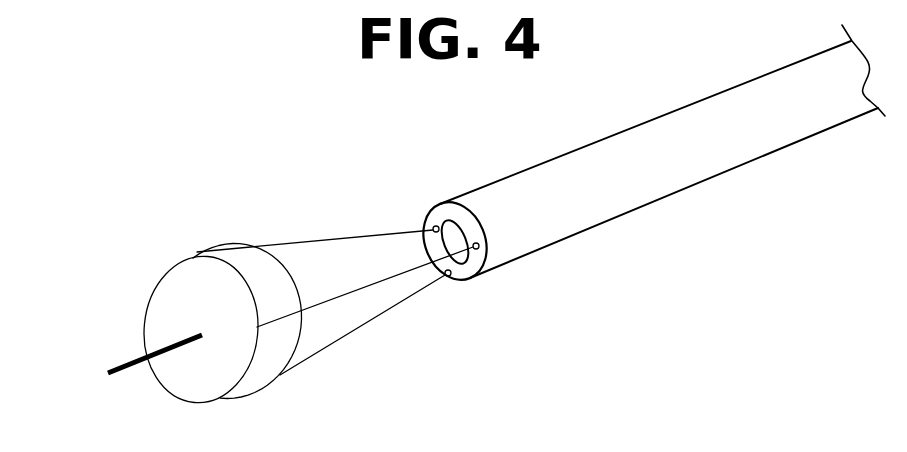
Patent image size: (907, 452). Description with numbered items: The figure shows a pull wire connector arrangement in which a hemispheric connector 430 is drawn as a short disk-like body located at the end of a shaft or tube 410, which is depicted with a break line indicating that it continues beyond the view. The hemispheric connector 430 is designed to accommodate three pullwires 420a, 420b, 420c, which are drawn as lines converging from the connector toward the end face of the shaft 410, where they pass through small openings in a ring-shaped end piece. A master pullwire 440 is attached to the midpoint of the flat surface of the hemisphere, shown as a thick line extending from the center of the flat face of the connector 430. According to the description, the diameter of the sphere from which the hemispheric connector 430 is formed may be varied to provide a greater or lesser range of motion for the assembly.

The tubular shaft 410 is at (675, 142).
The pullwire 420a is at (312, 242).
The pullwire 420b is at (407, 297).
The pullwire 420c is at (330, 303).
The hemispheric connector 430 is at (180, 263).
The master pullwire 440 is at (127, 362).